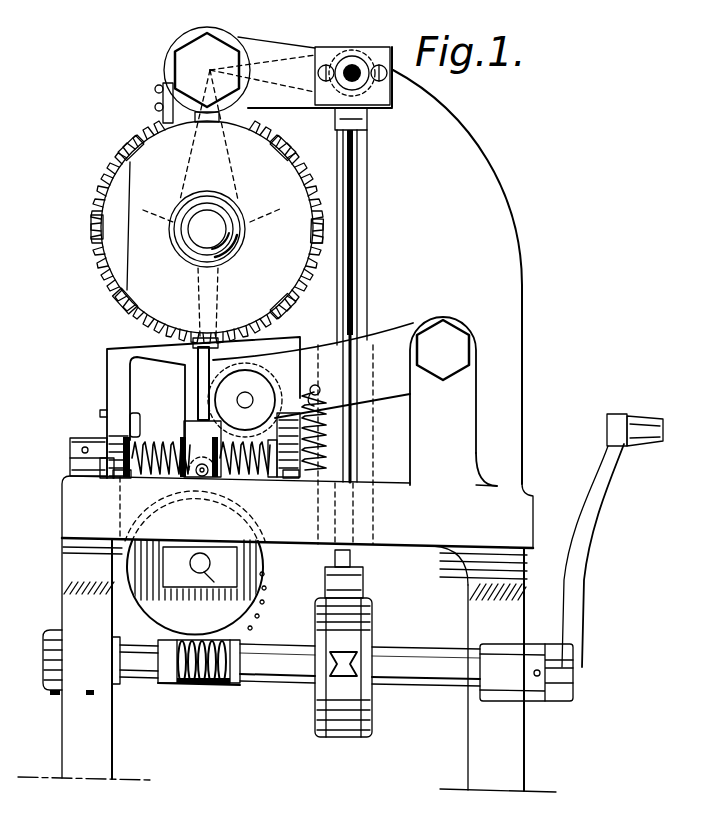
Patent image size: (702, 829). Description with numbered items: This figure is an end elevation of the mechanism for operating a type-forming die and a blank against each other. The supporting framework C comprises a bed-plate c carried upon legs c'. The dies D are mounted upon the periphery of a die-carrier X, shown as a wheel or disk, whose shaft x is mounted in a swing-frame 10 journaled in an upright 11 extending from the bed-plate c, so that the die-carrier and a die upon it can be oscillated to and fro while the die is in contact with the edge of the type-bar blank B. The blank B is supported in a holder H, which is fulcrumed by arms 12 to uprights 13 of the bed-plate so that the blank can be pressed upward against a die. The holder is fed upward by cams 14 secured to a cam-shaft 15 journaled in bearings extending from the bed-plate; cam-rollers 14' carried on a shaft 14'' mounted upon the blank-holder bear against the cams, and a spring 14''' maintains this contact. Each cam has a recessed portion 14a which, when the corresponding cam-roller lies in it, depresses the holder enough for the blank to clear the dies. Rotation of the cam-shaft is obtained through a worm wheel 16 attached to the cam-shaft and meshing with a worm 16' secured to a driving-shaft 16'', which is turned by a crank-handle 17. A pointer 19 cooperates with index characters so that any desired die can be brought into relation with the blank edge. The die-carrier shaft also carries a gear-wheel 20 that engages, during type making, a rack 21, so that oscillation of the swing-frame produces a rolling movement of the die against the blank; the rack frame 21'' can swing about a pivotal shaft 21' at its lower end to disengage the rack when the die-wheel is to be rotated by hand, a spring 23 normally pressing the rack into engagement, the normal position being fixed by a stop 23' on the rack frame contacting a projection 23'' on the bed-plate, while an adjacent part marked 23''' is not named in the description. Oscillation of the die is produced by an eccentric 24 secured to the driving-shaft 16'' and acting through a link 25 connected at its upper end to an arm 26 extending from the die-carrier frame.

The swing-frame 10 is at (170, 118).
The upright 11 is at (503, 313).
The arms 12 is at (358, 348).
The uprights 13 is at (453, 413).
The cams 14 is at (212, 587).
The cam-rollers 14' is at (244, 470).
The shaft 14'' is at (175, 486).
The spring 14''' is at (352, 427).
The recessed portion 14a is at (188, 496).
The cam-shaft 15 is at (200, 567).
The worm wheel 16 is at (308, 627).
The worm 16' is at (222, 650).
The driving-shaft 16'' is at (212, 699).
The crank-handle 17 is at (570, 582).
The pointer 19 is at (157, 100).
The gear-wheel 20 is at (100, 278).
The rack 21 is at (218, 393).
The pivotal shaft 21' is at (64, 443).
The rack frame 21'' is at (152, 398).
The spring 23 is at (156, 441).
The stop 23' is at (93, 485).
The projection 23'' is at (206, 498).
The spring block 23''' is at (281, 470).
The eccentric 24 is at (373, 622).
The link 25 is at (356, 306).
The arm 26 is at (283, 44).
The blank B is at (199, 379).
The supporting framework C is at (450, 277).
The type-forming die D is at (208, 118).
The holder H is at (202, 449).
The die-carrier X is at (177, 292).
The shaft x is at (222, 216).
The bed-plate c is at (287, 634).
The legs c' is at (287, 665).